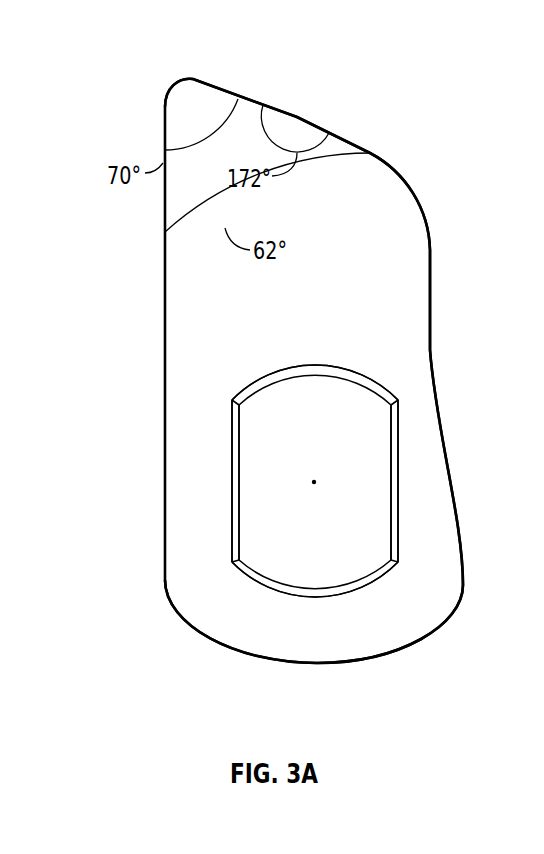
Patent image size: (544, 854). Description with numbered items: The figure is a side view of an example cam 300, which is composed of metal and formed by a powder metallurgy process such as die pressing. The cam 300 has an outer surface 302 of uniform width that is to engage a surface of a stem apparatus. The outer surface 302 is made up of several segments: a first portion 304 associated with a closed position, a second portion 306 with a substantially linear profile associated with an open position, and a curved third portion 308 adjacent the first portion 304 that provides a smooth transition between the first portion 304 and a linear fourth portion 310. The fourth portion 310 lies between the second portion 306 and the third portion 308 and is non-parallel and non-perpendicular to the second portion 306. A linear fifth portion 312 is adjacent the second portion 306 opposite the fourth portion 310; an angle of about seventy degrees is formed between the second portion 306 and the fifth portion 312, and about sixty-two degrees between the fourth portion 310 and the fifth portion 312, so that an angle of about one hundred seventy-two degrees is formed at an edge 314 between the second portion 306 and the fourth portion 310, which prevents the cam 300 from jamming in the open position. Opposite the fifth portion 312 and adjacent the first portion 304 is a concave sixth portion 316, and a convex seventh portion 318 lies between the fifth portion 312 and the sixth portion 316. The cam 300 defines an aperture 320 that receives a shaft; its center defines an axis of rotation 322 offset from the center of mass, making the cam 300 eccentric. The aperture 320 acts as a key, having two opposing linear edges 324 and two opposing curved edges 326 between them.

The cam 300 is at (120, 46).
The outer surface 302 is at (190, 617).
The first portion 304 is at (430, 247).
The second portion 306 is at (218, 86).
The third portion 308 is at (417, 198).
The fourth portion 310 is at (355, 143).
The fifth portion 312 is at (165, 243).
The edge 314 is at (305, 118).
The sixth portion 316 is at (430, 357).
The seventh portion 318 is at (413, 637).
The aperture 320 is at (342, 535).
The axis of rotation 322 is at (314, 482).
The linear edges 324 is at (392, 470).
The curved edges 326 is at (335, 372).